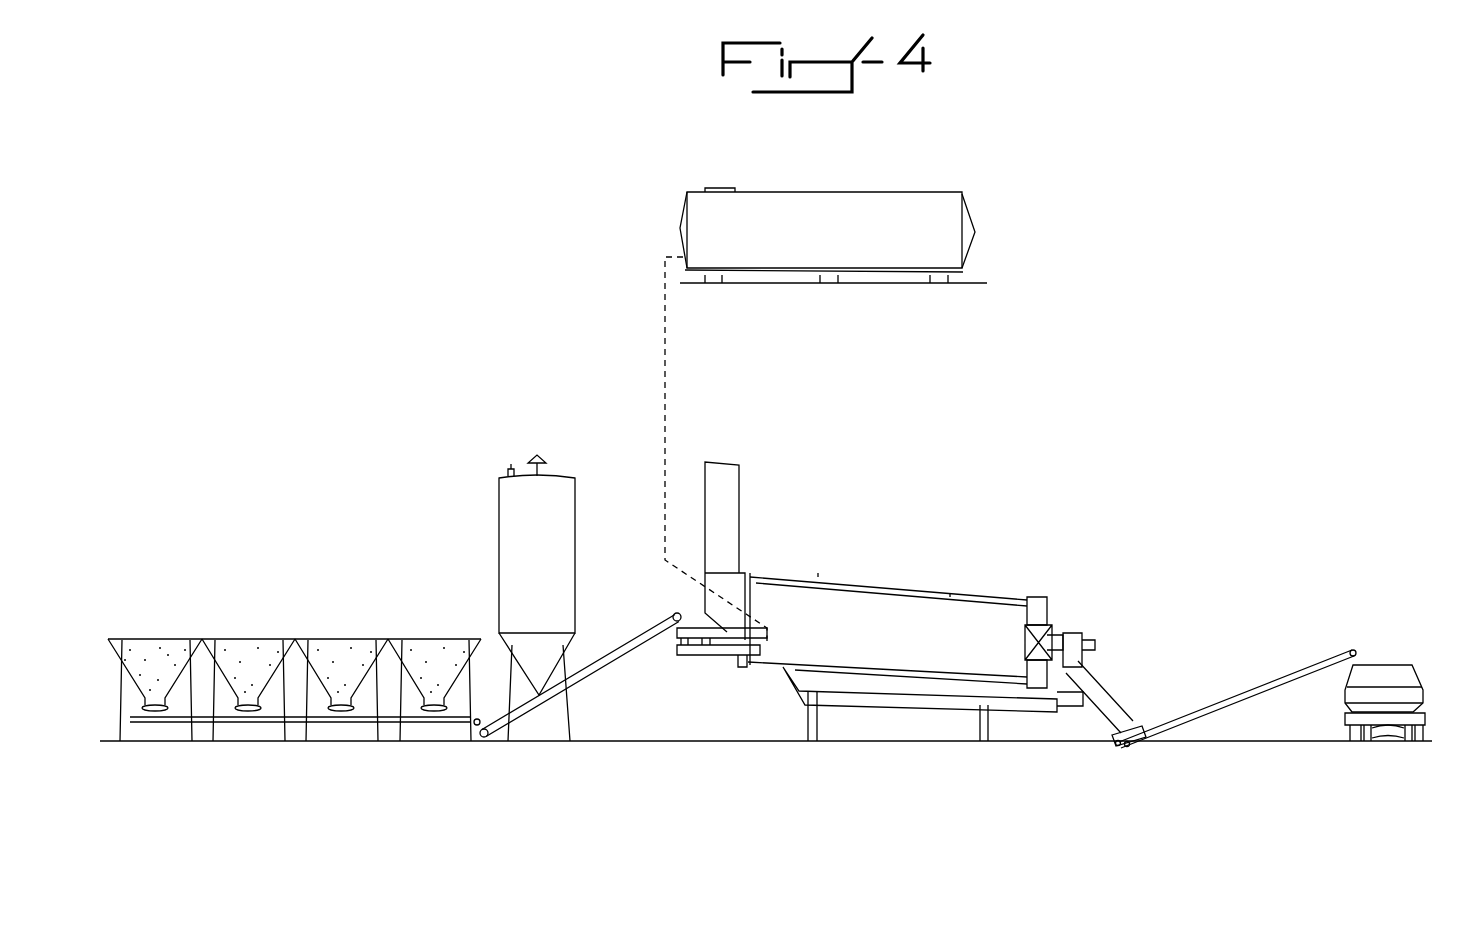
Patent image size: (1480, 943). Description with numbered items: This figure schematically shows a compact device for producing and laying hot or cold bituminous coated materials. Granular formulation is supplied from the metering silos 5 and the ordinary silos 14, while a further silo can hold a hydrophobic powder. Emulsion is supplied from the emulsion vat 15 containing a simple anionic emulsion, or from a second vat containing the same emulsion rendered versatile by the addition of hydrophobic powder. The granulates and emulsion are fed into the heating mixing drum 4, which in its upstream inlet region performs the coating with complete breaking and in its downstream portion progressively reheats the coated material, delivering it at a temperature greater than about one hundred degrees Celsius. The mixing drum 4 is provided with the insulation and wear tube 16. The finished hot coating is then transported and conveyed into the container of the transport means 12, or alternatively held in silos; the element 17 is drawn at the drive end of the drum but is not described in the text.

The heating mixing drum 4 is at (862, 588).
The metering silos 5 is at (233, 638).
The transport means 12 is at (1407, 668).
The ordinary silos 14 is at (575, 530).
The emulsion vat 15 is at (863, 170).
The insulation and wear tube 16 is at (891, 615).
The drive unit of mixer 17 is at (1032, 640).